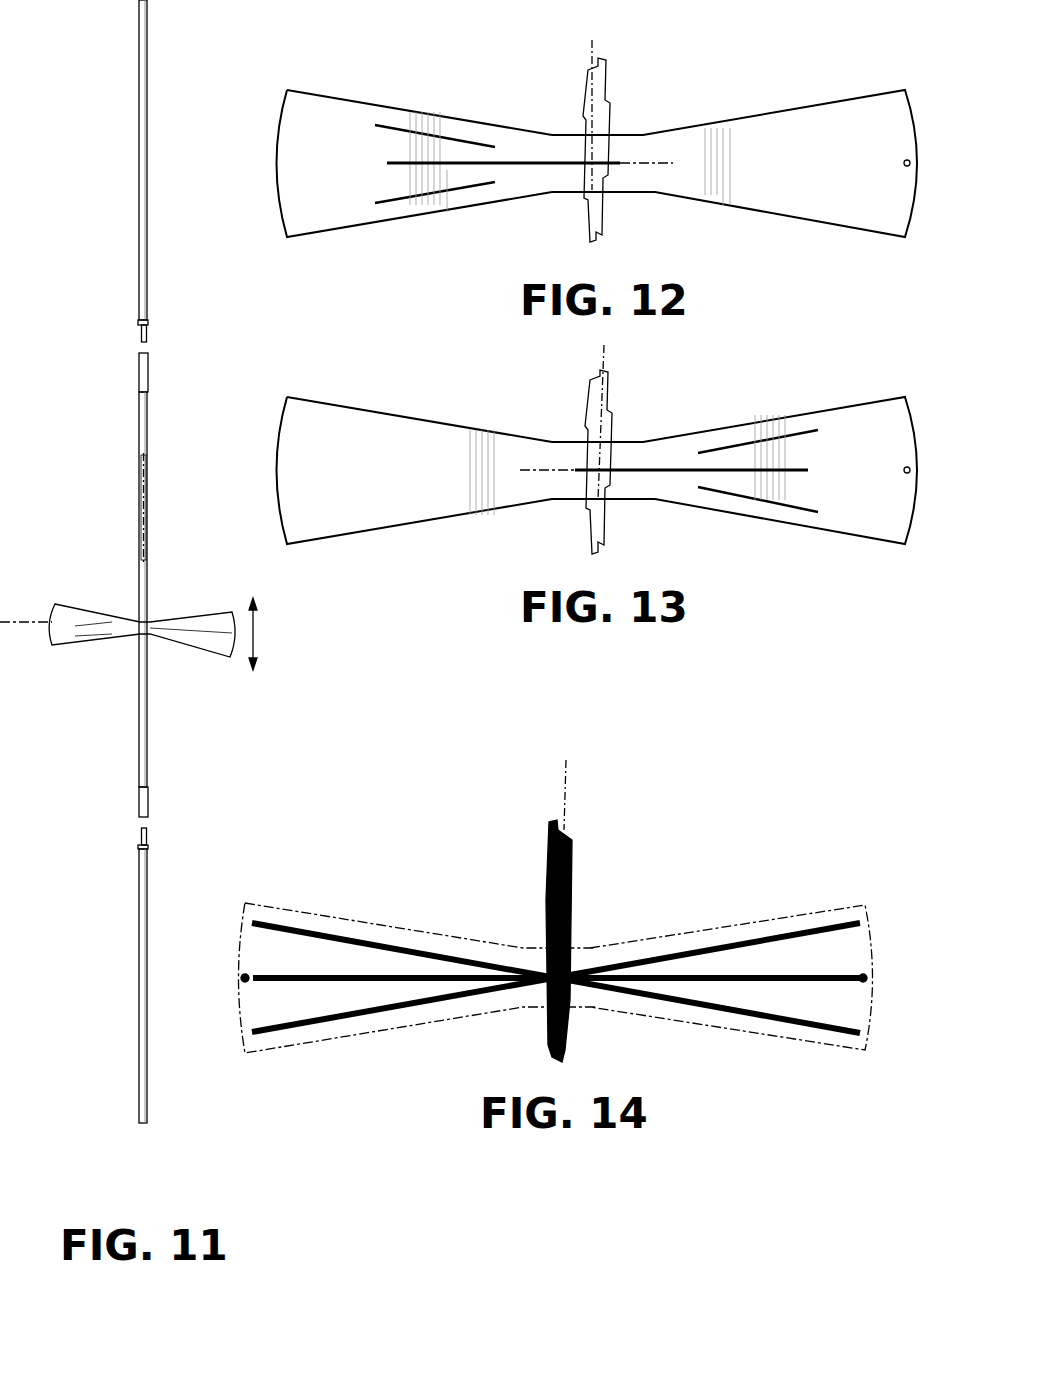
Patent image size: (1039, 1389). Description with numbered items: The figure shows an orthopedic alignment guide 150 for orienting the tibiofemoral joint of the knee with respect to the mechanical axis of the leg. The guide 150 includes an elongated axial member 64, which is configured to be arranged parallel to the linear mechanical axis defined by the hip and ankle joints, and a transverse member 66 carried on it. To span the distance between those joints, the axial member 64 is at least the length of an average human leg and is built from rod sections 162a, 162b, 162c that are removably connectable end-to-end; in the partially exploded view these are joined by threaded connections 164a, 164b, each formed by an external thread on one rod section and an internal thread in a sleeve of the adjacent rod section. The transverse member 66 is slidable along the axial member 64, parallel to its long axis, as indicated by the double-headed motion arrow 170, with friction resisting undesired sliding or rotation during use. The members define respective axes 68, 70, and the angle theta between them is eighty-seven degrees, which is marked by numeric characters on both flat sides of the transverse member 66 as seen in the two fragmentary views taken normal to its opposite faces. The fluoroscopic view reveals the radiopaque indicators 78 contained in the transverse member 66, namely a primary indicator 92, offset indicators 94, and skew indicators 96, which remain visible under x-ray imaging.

In FIG. 11, the orthopedic alignment guide 150 is at (112, 80).
In FIG. 12, the orthopedic alignment guide 150 is at (733, 70).
In FIG. 13, the orthopedic alignment guide 150 is at (462, 402).
In FIG. 14, the orthopedic alignment guide 150 is at (420, 905).
In FIG. 11, the rod section 162a is at (139, 152).
In FIG. 11, the rod section 162b is at (148, 418).
In FIG. 11, the rod section 162c is at (139, 1032).
In FIG. 11, the threaded connection 164a is at (154, 342).
In FIG. 11, the threaded connection 164b is at (155, 823).
In FIG. 11, the axial member 64 is at (136, 452).
In FIG. 12, the axial member 64 is at (610, 101).
In FIG. 13, the axial member 64 is at (588, 407).
In FIG. 14, the axial member 64 is at (548, 897).
In FIG. 11, the transverse member 66 is at (195, 603).
In FIG. 12, the transverse member 66 is at (596, 164).
In FIG. 13, the transverse member 66 is at (596, 470).
In FIG. 14, the transverse member 66 is at (775, 1040).
In FIG. 11, the axis of axial member 68 is at (139, 503).
In FIG. 12, the axis of axial member 68 is at (588, 58).
In FIG. 13, the axis of axial member 68 is at (604, 365).
In FIG. 14, the axis of axial member 68 is at (596, 795).
In FIG. 11, the axis of transverse member 70 is at (25, 621).
In FIG. 12, the axis of transverse member 70 is at (648, 172).
In FIG. 13, the axis of transverse member 70 is at (548, 480).
In FIG. 14, the axis of transverse member 70 is at (769, 971).
In FIG. 12, the radiopaque indicators 78 is at (312, 115).
In FIG. 13, the radiopaque indicators 78 is at (312, 420).
In FIG. 11, the motion arrow 170 is at (256, 637).
In FIG. 14, the primary indicator 92 is at (556, 978).
In FIG. 14, the offset indicators 94 is at (260, 926).
In FIG. 14, the skew indicators 96 is at (242, 978).